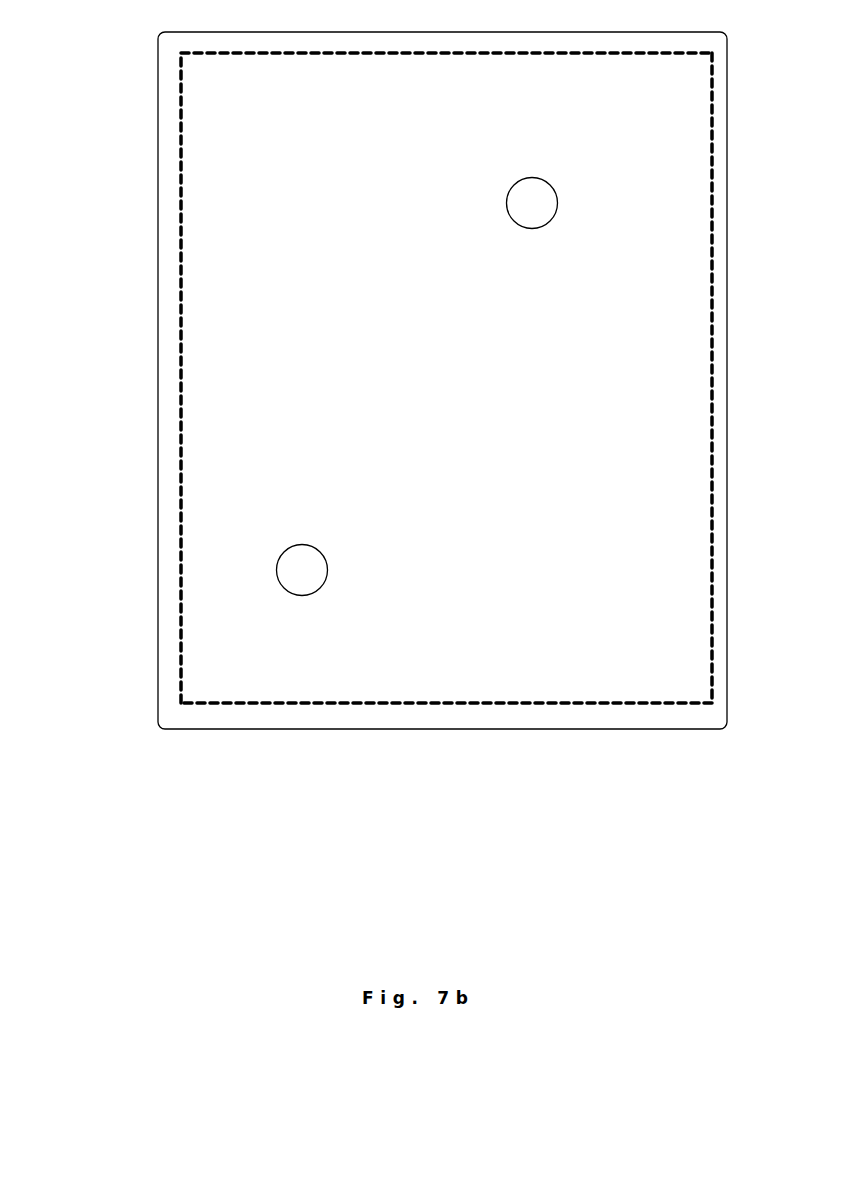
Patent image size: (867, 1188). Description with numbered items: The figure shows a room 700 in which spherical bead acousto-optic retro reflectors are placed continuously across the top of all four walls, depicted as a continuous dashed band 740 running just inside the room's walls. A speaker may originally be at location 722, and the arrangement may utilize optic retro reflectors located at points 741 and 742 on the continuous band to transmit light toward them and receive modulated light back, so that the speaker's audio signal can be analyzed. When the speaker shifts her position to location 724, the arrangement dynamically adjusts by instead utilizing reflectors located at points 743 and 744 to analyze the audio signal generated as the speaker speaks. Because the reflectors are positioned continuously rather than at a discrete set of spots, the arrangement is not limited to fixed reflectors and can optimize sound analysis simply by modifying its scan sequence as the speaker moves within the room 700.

The room 700 is at (160, 33).
The boundary 740 is at (387, 378).
The reflector point 741 is at (181, 163).
The reflector point 742 is at (508, 703).
The reflector point 743 is at (712, 302).
The reflector point 744 is at (449, 54).
The speaker location 722 is at (298, 545).
The speaker location 724 is at (525, 178).